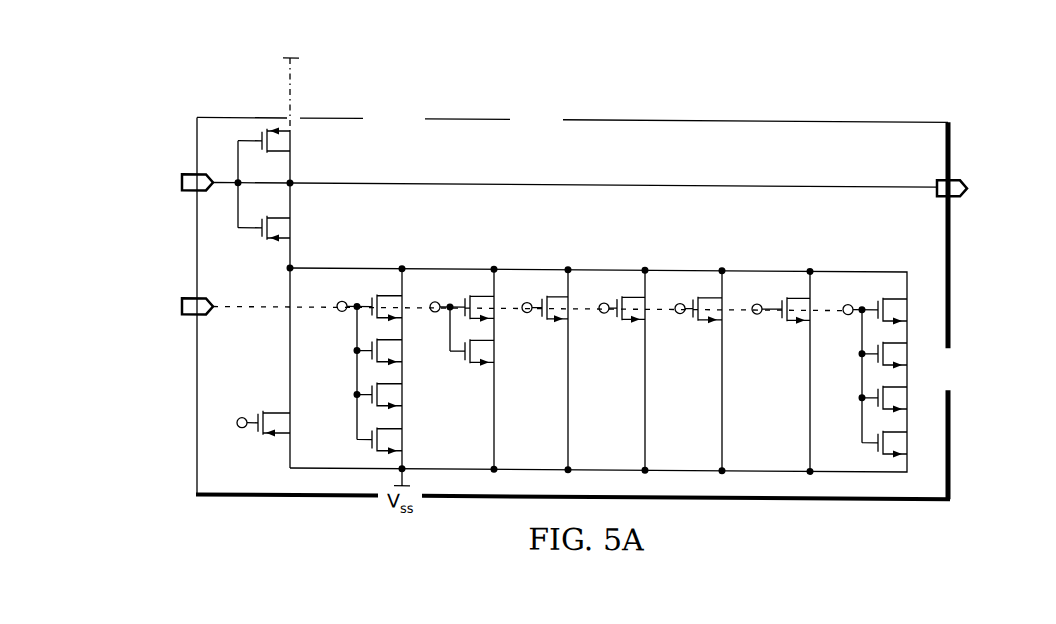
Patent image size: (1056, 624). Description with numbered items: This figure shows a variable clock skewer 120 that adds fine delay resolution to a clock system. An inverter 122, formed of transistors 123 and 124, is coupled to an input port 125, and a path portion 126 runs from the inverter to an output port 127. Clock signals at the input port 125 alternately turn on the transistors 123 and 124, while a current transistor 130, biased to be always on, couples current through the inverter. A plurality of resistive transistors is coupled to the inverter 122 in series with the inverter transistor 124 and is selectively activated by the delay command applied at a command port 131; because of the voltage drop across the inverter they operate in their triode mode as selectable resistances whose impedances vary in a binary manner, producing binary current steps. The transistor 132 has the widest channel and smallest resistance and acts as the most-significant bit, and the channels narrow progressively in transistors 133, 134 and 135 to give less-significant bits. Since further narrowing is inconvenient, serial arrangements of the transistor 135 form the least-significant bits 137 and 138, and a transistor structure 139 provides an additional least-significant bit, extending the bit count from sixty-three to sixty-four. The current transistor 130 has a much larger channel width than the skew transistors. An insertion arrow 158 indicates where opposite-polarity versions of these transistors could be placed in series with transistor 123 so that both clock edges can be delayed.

The variable clock skewer 120 is at (738, 108).
The inverter 122 is at (324, 292).
The inverter transistor 123 is at (285, 140).
The inverter transistor 124 is at (285, 229).
The input port 125 is at (186, 203).
The path portion 126 is at (555, 183).
The output port 127 is at (957, 199).
The current transistor 130 is at (251, 411).
The command port 131 is at (185, 326).
The resistive transistor 132 is at (781, 371).
The resistive transistor 133 is at (698, 371).
The resistive transistor 134 is at (620, 370).
The resistive transistor 135 is at (543, 369).
The least-significant bit 137 is at (462, 369).
The least-significant bit 138 is at (357, 368).
The transistor structure 139 is at (896, 378).
The insertion arrow 158 is at (305, 90).